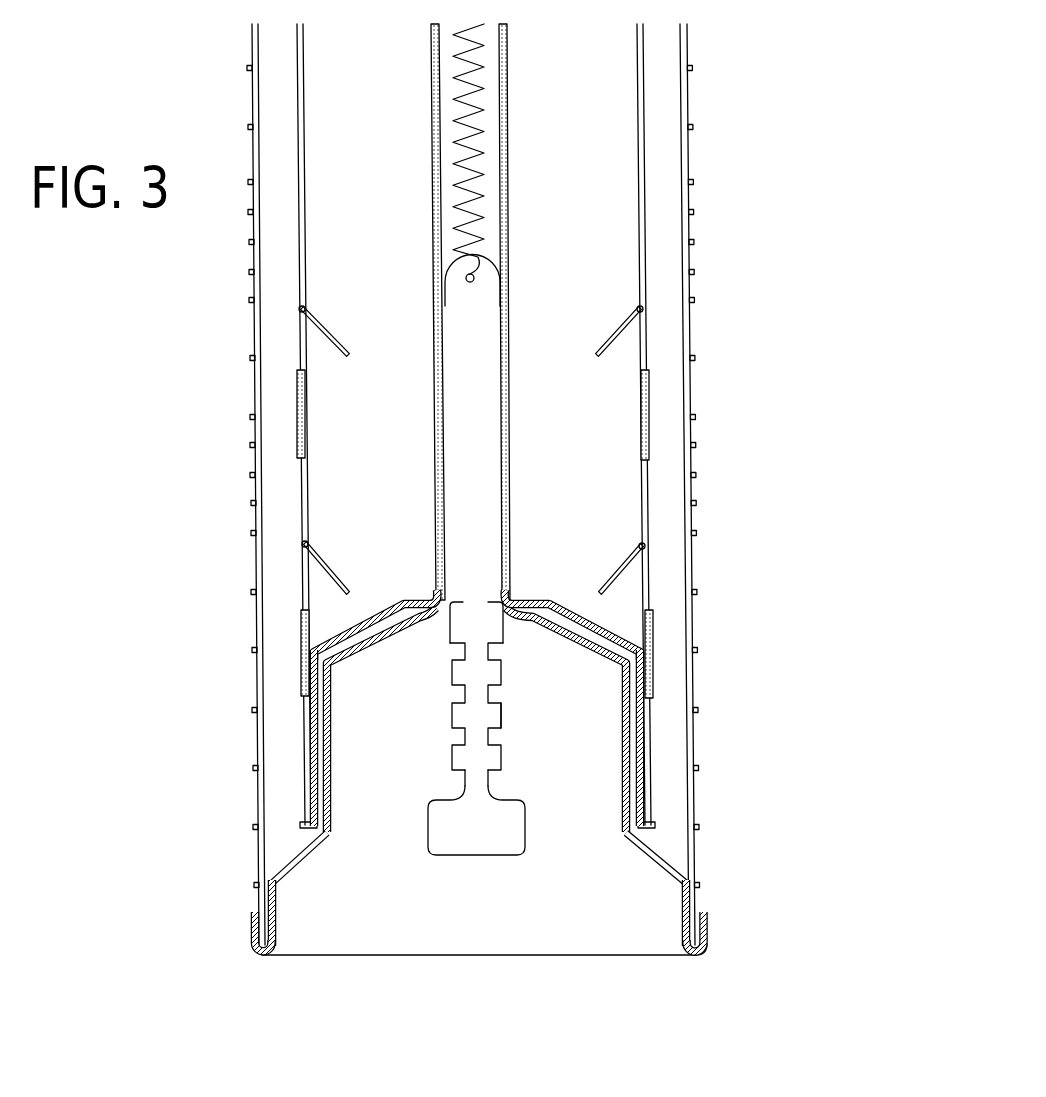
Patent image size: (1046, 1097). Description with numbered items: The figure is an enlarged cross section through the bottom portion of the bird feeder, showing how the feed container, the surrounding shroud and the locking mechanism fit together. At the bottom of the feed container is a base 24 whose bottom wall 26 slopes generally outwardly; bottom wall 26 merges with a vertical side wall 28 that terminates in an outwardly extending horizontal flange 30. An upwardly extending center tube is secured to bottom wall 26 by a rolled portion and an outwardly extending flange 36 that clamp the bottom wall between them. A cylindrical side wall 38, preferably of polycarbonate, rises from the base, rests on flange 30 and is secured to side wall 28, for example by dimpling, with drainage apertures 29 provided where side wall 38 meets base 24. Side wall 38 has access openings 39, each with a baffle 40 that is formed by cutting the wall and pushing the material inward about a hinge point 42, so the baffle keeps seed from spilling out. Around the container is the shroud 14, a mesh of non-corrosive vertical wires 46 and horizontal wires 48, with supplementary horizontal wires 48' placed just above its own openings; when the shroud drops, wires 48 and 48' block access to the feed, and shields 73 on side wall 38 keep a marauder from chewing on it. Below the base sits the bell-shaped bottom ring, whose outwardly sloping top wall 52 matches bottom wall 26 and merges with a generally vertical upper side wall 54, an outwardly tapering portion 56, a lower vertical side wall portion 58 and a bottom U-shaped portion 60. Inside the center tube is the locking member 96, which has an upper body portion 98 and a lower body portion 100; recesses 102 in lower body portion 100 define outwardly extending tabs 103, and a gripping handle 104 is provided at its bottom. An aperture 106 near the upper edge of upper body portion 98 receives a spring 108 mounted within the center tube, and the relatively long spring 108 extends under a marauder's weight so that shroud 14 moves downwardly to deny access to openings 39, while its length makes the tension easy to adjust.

The shroud 14 is at (224, 297).
The base 24 is at (403, 547).
The bottom wall 26 is at (602, 625).
The vertical side wall 28 is at (645, 730).
The drainage apertures 29 is at (315, 648).
The horizontal flange 30 is at (653, 827).
The outwardly extending flange 36 is at (532, 620).
The side wall 38 is at (643, 204).
The access openings 39 is at (286, 587).
The baffle 40 is at (355, 557).
The hinge point 42 is at (310, 540).
The vertical wires 46 is at (690, 378).
The horizontal wires 48 is at (576, 720).
The supplementary horizontal wires 48' is at (562, 301).
The top wall 52 is at (423, 622).
The upper side wall 54 is at (627, 720).
The outwardly tapering portion 56 is at (640, 850).
The lower vertical side wall portion 58 is at (683, 910).
The bottom U-shaped portion 60 is at (714, 960).
The shields 73 is at (298, 405).
The locking member 96 is at (419, 728).
The upper body portion 98 is at (492, 401).
The lower body portion 100 is at (492, 733).
The recesses 102 is at (447, 783).
The tabs 103 is at (503, 723).
The gripping handle 104 is at (476, 822).
The aperture 106 is at (458, 284).
The spring 108 is at (474, 103).